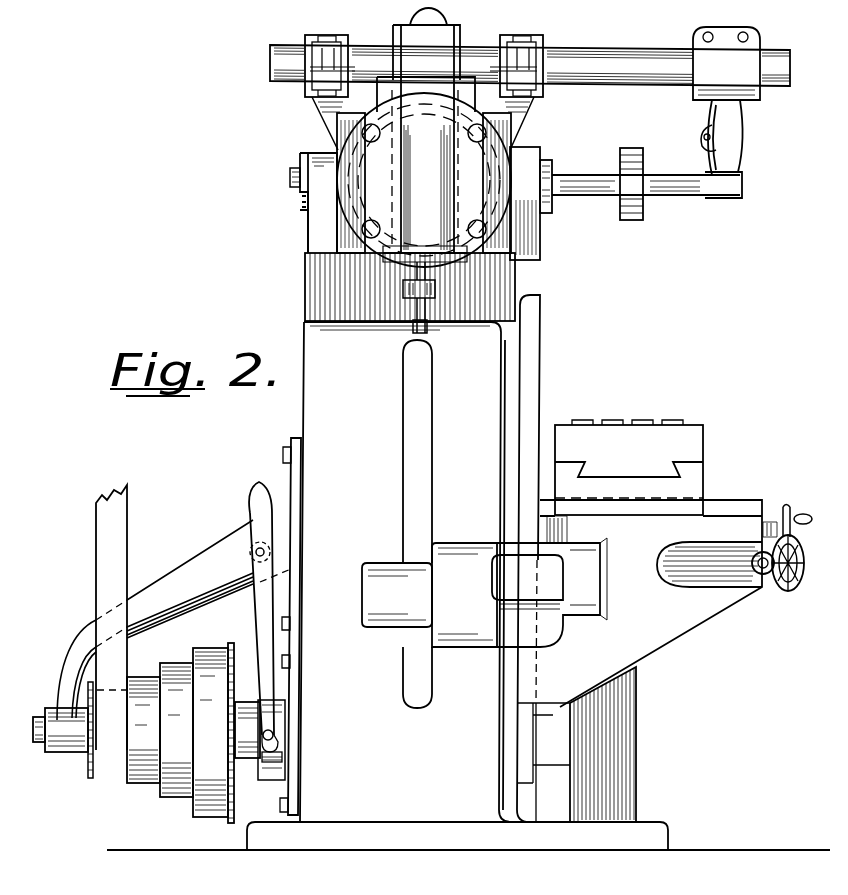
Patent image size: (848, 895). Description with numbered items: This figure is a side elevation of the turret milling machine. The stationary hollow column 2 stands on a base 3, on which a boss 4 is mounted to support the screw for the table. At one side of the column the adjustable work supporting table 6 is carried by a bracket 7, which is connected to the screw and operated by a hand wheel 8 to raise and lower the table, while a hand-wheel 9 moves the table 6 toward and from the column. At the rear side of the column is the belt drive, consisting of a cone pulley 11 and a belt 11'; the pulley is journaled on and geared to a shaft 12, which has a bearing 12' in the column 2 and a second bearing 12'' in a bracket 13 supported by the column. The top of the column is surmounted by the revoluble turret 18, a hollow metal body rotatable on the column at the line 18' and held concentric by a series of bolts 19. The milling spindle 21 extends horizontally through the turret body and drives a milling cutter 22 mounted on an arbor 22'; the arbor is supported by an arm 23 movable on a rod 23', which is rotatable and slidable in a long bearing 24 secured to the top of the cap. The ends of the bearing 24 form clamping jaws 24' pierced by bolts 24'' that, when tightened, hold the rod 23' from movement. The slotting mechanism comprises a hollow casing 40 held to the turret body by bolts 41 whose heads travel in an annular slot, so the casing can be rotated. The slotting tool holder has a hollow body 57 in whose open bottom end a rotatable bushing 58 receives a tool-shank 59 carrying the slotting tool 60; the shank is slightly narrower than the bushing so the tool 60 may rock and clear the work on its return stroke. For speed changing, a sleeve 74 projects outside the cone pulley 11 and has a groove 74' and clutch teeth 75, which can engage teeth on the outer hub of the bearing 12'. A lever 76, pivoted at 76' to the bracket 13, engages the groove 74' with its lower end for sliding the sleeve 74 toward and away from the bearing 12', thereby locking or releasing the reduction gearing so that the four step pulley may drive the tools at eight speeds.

The column 2 is at (435, 558).
The base 3 is at (468, 836).
The boss 4 is at (603, 744).
The work supporting table 6 is at (629, 467).
The bracket 7 is at (658, 603).
The hand wheel 8 is at (786, 590).
The hand-wheel 9 is at (787, 507).
The cone pulley 11 is at (161, 731).
The belt 11' is at (130, 617).
The shaft 12 is at (39, 748).
The bearing 12' is at (305, 626).
The bearing 12'' is at (66, 749).
The bracket 13 is at (174, 620).
The turret 18 is at (393, 237).
The line of rotation 18' is at (389, 287).
The bolts 19 is at (337, 125).
The milling spindle 21 is at (290, 178).
The milling cutter 22 is at (633, 172).
The arbor 22' is at (626, 203).
The arbor support 23 is at (732, 101).
The rod 23' is at (611, 68).
The bearing 24 is at (530, 50).
The clamping jaws 24' is at (412, 54).
The bolts 24'' is at (451, 52).
The casing 40 is at (447, 20).
The bolts 41 is at (362, 135).
The tool holder body 57 is at (426, 143).
The bushing 58 is at (436, 283).
The tool-shank 59 is at (408, 290).
The slotting tool 60 is at (428, 297).
The sleeve 74 is at (246, 718).
The groove 74' is at (267, 776).
The clutch teeth 75 is at (285, 715).
The lever 76 is at (253, 617).
The pivot 76' is at (274, 643).